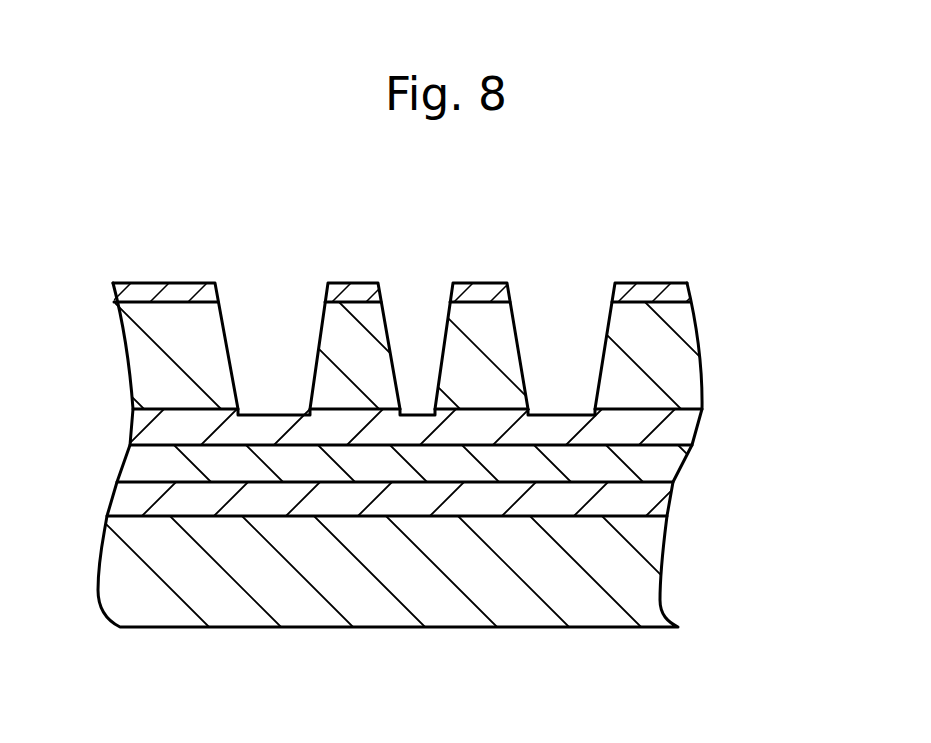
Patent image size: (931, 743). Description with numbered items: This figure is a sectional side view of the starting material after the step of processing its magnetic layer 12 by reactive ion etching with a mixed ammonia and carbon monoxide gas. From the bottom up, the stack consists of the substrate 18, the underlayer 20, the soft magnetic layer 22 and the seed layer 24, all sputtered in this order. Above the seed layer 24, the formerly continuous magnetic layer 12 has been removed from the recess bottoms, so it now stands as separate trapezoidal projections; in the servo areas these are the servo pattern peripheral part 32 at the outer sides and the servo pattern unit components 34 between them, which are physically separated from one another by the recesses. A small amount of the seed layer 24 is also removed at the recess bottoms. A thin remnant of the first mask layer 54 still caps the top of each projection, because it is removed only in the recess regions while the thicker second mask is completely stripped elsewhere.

The magnetic layer 12 is at (712, 350).
The substrate 18 is at (660, 552).
The underlayer 20 is at (675, 497).
The soft magnetic layer 22 is at (683, 460).
The seed layer 24 is at (700, 422).
The servo pattern peripheral part 32 is at (157, 318).
The servo pattern unit components 34 is at (365, 305).
The first mask layer 54 is at (198, 282).